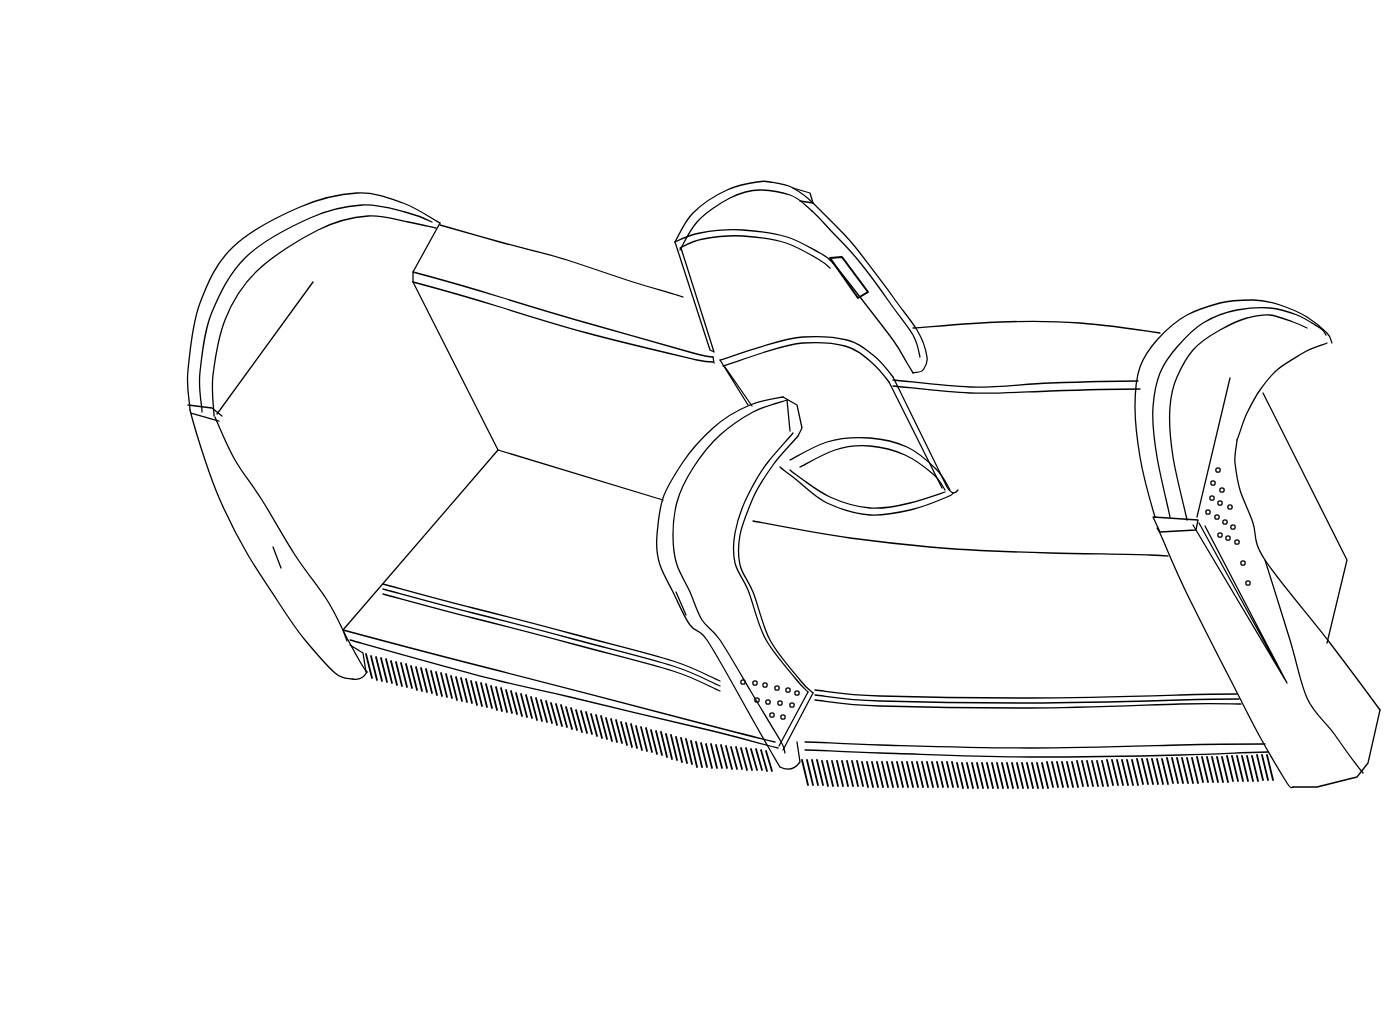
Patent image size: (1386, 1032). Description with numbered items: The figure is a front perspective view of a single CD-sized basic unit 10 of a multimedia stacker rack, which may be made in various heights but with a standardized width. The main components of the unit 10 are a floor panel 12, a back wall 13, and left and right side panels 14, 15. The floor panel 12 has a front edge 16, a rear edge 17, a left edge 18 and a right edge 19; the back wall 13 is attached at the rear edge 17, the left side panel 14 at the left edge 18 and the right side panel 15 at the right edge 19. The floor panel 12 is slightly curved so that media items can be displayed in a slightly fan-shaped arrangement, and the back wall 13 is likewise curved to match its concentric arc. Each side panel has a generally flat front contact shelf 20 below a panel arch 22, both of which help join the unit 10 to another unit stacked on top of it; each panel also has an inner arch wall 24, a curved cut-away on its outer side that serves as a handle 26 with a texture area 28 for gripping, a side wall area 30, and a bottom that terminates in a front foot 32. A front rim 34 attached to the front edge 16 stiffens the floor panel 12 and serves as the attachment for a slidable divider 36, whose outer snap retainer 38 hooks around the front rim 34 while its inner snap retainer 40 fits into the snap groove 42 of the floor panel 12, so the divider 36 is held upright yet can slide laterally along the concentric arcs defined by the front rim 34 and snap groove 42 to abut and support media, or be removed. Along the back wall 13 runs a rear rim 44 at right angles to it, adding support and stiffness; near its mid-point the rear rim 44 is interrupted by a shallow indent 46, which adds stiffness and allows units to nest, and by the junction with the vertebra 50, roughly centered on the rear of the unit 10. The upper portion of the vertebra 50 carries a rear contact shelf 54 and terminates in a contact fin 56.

The basic unit 10 is at (1224, 186).
The floor panel 12 is at (950, 614).
The back wall 13 is at (634, 436).
The left side panel 14 is at (284, 640).
The right side panel 15 is at (1300, 796).
The front edge 16 is at (547, 684).
The rear edge 17 is at (608, 493).
The left edge 18 is at (424, 557).
The right edge 19 is at (1246, 742).
The front contact shelf 20 is at (188, 402).
The panel arch 22 is at (232, 253).
The inner arch wall 24 is at (303, 265).
The handle 26 is at (1270, 342).
The texture area 28 is at (1241, 509).
The side wall area 30 is at (1283, 512).
The front foot 32 is at (367, 676).
The front rim 34 is at (670, 755).
The divider 36 is at (727, 555).
The outer snap retainer 38 is at (779, 768).
The inner snap retainer 40 is at (815, 697).
The snap groove 42 is at (990, 703).
The rear rim 44 is at (539, 297).
The indent 46 is at (825, 379).
The vertebra 50 is at (909, 299).
The rear contact shelf 54 is at (845, 242).
The contact fin 56 is at (733, 217).